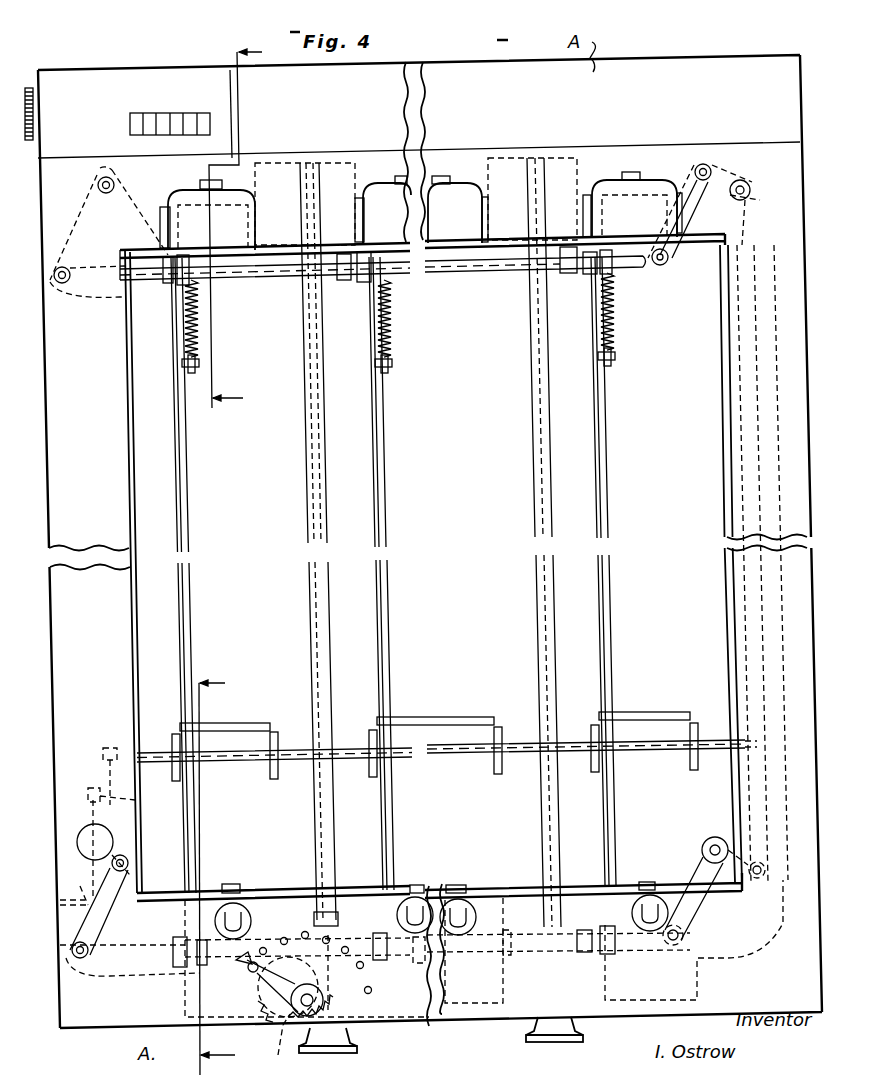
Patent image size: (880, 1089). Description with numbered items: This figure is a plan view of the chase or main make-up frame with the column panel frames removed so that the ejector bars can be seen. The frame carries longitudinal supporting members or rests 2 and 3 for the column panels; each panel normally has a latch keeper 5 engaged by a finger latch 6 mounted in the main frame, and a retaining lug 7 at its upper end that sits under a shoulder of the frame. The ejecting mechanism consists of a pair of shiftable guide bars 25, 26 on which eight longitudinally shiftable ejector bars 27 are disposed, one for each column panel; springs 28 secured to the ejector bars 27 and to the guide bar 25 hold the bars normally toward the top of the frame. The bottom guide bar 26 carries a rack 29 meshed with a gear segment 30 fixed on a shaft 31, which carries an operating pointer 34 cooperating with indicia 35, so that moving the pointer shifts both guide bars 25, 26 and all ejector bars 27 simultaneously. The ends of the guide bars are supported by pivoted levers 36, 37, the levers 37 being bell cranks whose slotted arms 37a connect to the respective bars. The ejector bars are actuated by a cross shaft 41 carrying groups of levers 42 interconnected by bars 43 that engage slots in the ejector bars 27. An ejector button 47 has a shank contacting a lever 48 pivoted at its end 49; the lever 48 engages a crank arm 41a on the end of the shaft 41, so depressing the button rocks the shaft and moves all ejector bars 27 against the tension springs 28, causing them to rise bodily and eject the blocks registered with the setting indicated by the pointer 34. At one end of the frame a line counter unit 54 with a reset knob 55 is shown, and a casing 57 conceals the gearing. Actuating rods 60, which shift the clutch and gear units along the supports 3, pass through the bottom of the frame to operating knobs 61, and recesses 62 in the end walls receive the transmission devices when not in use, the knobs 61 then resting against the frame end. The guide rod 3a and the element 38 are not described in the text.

The longitudinal supporting member 2 is at (152, 818).
The longitudinal supporting member 3 is at (332, 818).
The guide rod 3a is at (308, 490).
The latch keeper 5 is at (224, 874).
The finger latch 6 is at (655, 900).
The retaining lug 7 is at (205, 185).
The shiftable guide bar 25 is at (279, 282).
The shiftable guide bar 26 is at (512, 940).
The ejector bar 27 is at (187, 633).
The spring 28 is at (199, 340).
The rack 29 is at (205, 908).
The gear segment 30 is at (276, 1044).
The shaft 31 is at (307, 1017).
The operating pointer 34 is at (262, 978).
The indicia 35 is at (300, 925).
The pivoted lever 36 is at (96, 236).
The pivoted lever 37 is at (727, 178).
The slotted arm 37a is at (700, 868).
The guide 38 is at (745, 438).
The cross shaft 41 is at (533, 748).
The crank arm 41a is at (100, 765).
The lever 42 is at (174, 722).
The bar 43 is at (240, 703).
The ejector button 47 is at (85, 828).
The lever 48 is at (95, 809).
The pivot end 49 is at (74, 886).
The line counter unit 54 is at (193, 112).
The reset knob 55 is at (27, 88).
The casing 57 is at (672, 44).
The actuating rod 60 is at (322, 515).
The operating knob 61 is at (338, 1042).
The recess 62 is at (280, 172).